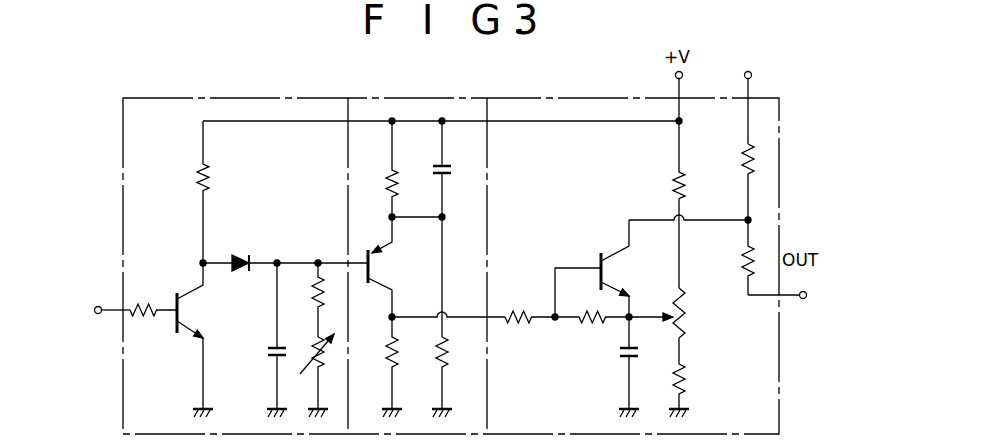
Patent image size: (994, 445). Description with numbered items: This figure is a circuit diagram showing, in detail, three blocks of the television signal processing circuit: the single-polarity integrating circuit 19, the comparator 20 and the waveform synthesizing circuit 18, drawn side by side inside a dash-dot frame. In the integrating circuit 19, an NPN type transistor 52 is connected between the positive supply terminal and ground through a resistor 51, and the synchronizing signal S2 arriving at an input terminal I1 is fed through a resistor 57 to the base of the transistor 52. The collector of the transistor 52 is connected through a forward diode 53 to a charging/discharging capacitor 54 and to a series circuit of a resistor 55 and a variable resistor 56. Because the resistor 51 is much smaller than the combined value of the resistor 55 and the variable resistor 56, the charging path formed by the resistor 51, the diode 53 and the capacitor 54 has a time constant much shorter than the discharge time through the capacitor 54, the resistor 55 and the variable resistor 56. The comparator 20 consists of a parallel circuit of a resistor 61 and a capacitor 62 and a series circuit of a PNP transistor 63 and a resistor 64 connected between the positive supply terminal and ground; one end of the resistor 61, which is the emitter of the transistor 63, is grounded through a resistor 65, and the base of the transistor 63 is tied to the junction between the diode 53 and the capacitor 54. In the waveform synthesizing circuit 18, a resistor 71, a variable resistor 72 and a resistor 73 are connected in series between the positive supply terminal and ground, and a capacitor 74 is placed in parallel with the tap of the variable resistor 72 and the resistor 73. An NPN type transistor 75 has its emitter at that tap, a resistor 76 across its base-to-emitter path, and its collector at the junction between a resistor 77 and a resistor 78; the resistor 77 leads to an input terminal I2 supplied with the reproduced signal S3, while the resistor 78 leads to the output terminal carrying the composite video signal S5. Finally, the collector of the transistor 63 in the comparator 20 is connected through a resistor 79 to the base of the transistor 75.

The waveform synthesizing circuit 18 is at (548, 98).
The single-polarity integrating circuit 19 is at (262, 98).
The comparator 20 is at (405, 98).
The resistor 51 is at (197, 183).
The NPN type transistor 52 is at (186, 320).
The forward diode 53 is at (245, 257).
The charging/discharging capacitor 54 is at (268, 352).
The resistor 55 is at (314, 281).
The variable resistor 56 is at (308, 358).
The resistor 57 is at (160, 305).
The resistor 61 is at (398, 176).
The capacitor 62 is at (448, 172).
The PNP transistor 63 is at (378, 271).
The resistor 64 is at (384, 350).
The resistor 65 is at (435, 342).
The resistor 71 is at (673, 178).
The variable resistor 72 is at (682, 340).
The resistor 73 is at (684, 384).
The capacitor 74 is at (616, 356).
The NPN type transistor 75 is at (605, 271).
The resistor 76 is at (580, 330).
The resistor 77 is at (742, 160).
The resistor 78 is at (737, 256).
The resistor 79 is at (523, 305).
The input terminal I1 is at (98, 306).
The input terminal I2 is at (750, 72).
The synchronizing signal S2 is at (100, 313).
The reproduced signal S3 is at (746, 87).
The composite video signal S5 is at (778, 296).